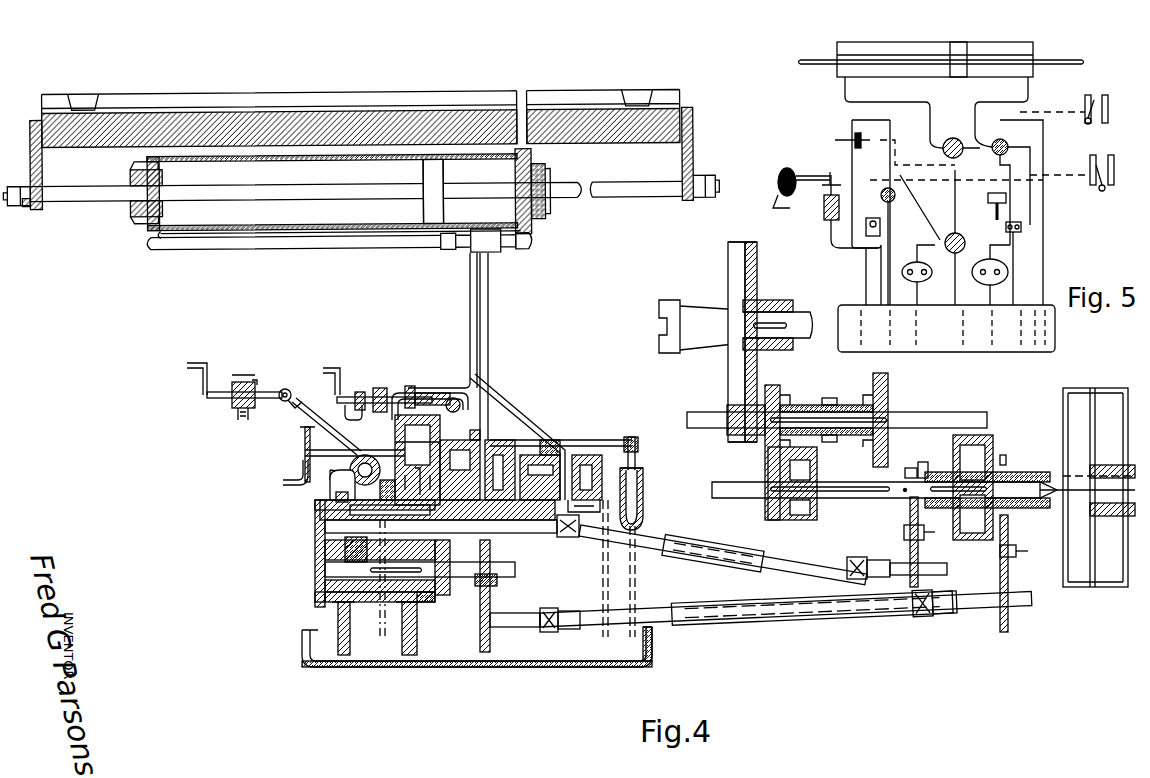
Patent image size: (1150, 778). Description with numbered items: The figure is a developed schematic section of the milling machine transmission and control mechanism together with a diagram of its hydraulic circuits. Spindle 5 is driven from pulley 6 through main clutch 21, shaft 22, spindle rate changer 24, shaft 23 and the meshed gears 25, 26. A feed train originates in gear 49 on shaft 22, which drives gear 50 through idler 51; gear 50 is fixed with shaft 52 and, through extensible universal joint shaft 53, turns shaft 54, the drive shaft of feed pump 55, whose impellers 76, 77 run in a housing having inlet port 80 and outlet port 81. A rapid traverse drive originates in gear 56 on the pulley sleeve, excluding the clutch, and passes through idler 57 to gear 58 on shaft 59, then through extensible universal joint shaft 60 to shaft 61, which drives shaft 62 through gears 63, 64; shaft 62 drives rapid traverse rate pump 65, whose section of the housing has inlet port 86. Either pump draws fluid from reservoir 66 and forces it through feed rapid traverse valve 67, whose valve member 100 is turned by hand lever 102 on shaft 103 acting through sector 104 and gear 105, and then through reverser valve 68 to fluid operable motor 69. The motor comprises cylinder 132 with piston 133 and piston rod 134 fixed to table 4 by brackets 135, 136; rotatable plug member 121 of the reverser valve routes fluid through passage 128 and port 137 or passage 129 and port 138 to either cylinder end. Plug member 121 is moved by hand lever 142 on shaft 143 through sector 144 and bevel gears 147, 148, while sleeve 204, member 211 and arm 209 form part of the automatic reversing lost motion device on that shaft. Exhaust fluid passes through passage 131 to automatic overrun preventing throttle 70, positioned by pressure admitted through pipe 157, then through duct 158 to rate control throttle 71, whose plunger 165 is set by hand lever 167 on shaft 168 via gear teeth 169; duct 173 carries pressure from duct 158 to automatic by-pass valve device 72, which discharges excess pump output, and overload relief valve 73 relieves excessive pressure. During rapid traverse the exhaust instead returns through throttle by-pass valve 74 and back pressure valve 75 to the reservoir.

In FIG. 4, the table 4 is at (130, 97).
In FIG. 4, the spindle 5 is at (668, 300).
In FIG. 4, the pulley 6 is at (1104, 388).
In FIG. 4, the main clutch 21 is at (1003, 440).
In FIG. 4, the shaft 22 is at (870, 500).
In FIG. 4, the shaft 23 is at (905, 412).
In FIG. 4, the spindle rate changer 24 is at (821, 393).
In FIG. 4, the gear 25 is at (760, 440).
In FIG. 4, the gear 26 is at (757, 272).
In FIG. 4, the gear 49 is at (920, 452).
In FIG. 4, the gear 50 is at (918, 563).
In FIG. 4, the idler 51 is at (908, 515).
In FIG. 4, the shaft 52 is at (948, 568).
In FIG. 4, the extensible universal joint shaft 53 is at (700, 560).
In FIG. 4, the shaft 54 is at (510, 530).
In FIG. 4, the feed pump 55 is at (307, 553).
In FIG. 5, the feed pump 55 is at (905, 276).
In FIG. 4, the gear 56 is at (1006, 456).
In FIG. 4, the idler 57 is at (1010, 568).
In FIG. 4, the gear 58 is at (1010, 622).
In FIG. 4, the shaft 59 is at (968, 607).
In FIG. 4, the extensible universal joint shaft 60 is at (828, 608).
In FIG. 4, the shaft 61 is at (506, 624).
In FIG. 4, the shaft 62 is at (508, 562).
In FIG. 4, the gear 63 is at (492, 603).
In FIG. 4, the gear 64 is at (498, 585).
In FIG. 4, the rapid traverse rate pump 65 is at (432, 602).
In FIG. 5, the rapid traverse rate pump 65 is at (1005, 278).
In FIG. 4, the reservoir 66 is at (360, 650).
In FIG. 5, the reservoir 66 is at (946, 328).
In FIG. 5, the feed rapid traverse valve 67 is at (945, 240).
In FIG. 4, the reverser valve 68 is at (508, 395).
In FIG. 5, the reverser valve 68 is at (985, 155).
In FIG. 4, the fluid operable motor 69 is at (228, 243).
In FIG. 5, the fluid operable motor 69 is at (930, 80).
In FIG. 4, the automatic overrun preventing throttle 70 is at (545, 440).
In FIG. 5, the automatic overrun preventing throttle 70 is at (838, 140).
In FIG. 4, the rate control throttle 71 is at (391, 490).
In FIG. 5, the rate control throttle 71 is at (823, 208).
In FIG. 4, the automatic by-pass valve device 72 is at (424, 385).
In FIG. 5, the automatic by-pass valve device 72 is at (1006, 192).
In FIG. 4, the overload relief valve 73 is at (417, 460).
In FIG. 5, the overload relief valve 73 is at (1008, 232).
In FIG. 4, the throttle by-pass valve 74 is at (575, 458).
In FIG. 5, the throttle by-pass valve 74 is at (886, 205).
In FIG. 4, the back pressure valve 75 is at (584, 511).
In FIG. 5, the back pressure valve 75 is at (866, 232).
In FIG. 4, the gear 76 is at (320, 515).
In FIG. 4, the gear 77 is at (318, 591).
In FIG. 4, the inlet port 80 is at (337, 612).
In FIG. 4, the outlet port 81 is at (330, 490).
In FIG. 4, the inlet port 86 is at (410, 640).
In FIG. 4, the valve member 100 is at (362, 455).
In FIG. 4, the hand lever 102 is at (206, 356).
In FIG. 5, the hand lever 102 is at (1104, 186).
In FIG. 4, the shaft 103 is at (272, 399).
In FIG. 4, the sector 104 is at (290, 378).
In FIG. 4, the gear 105 is at (305, 405).
In FIG. 4, the rotatable plug member 121 is at (500, 460).
In FIG. 4, the passage 128 is at (358, 249).
In FIG. 4, the passage 129 is at (492, 290).
In FIG. 4, the passage 131 is at (522, 492).
In FIG. 4, the cylinder 132 is at (293, 232).
In FIG. 4, the piston 133 is at (432, 222).
In FIG. 4, the piston rod 134 is at (88, 200).
In FIG. 4, the bracket 135 is at (30, 205).
In FIG. 4, the bracket 136 is at (688, 204).
In FIG. 4, the port 137 is at (162, 212).
In FIG. 4, the port 138 is at (514, 207).
In FIG. 4, the hand lever 142 is at (363, 350).
In FIG. 5, the hand lever 142 is at (1100, 124).
In FIG. 4, the shaft 143 is at (364, 390).
In FIG. 4, the sector 144 is at (428, 396).
In FIG. 4, the bevel gear 147 is at (449, 412).
In FIG. 4, the bevel gear 148 is at (473, 428).
In FIG. 4, the pipe 157 is at (561, 425).
In FIG. 4, the duct 158 is at (600, 540).
In FIG. 4, the plunger 165 is at (646, 481).
In FIG. 4, the hand lever 167 is at (308, 494).
In FIG. 5, the hand lever 167 is at (778, 195).
In FIG. 4, the shaft 168 is at (357, 454).
In FIG. 4, the gear teeth 169 is at (638, 456).
In FIG. 4, the duct 173 is at (505, 430).
In FIG. 4, the sleeve 204 is at (392, 388).
In FIG. 4, the arm 209 is at (348, 412).
In FIG. 4, the member 211 is at (369, 392).